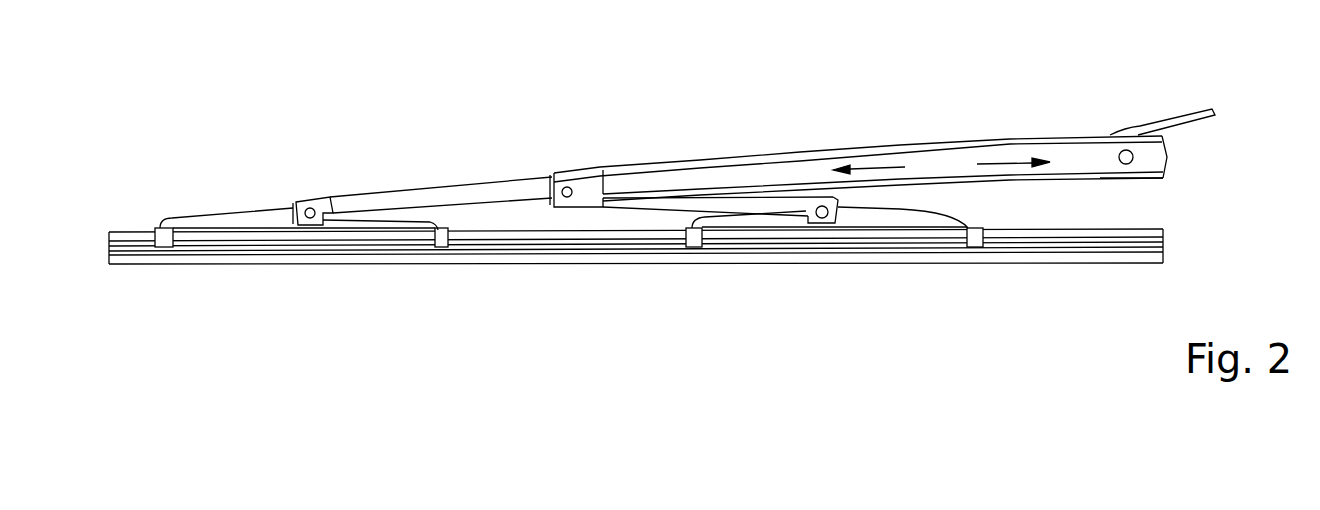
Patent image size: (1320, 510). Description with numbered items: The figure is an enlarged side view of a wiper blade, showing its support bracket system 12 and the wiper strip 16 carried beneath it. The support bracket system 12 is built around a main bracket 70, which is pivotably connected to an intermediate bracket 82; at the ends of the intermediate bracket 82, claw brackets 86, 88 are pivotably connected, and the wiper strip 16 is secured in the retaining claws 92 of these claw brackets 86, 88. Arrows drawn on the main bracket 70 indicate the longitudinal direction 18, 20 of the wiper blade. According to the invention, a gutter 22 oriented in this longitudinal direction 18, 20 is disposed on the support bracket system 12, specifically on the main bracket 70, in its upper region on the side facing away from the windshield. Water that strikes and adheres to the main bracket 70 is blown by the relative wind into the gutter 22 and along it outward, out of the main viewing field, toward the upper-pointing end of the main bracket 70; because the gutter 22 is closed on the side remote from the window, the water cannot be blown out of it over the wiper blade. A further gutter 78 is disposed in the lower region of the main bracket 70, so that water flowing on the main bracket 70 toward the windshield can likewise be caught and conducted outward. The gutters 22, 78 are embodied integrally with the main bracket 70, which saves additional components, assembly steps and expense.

The support bracket system 12 is at (730, 128).
The wiper strip 16 is at (835, 284).
The longitudinal direction 18 is at (880, 166).
The longitudinal direction 20 is at (1012, 163).
The gutter 22 is at (950, 143).
The main bracket 70 is at (581, 183).
The gutter 78 is at (1137, 178).
The intermediate bracket 82 is at (353, 196).
The claw bracket 86 is at (241, 219).
The claw bracket 88 is at (750, 214).
The retaining claw 92 is at (172, 240).